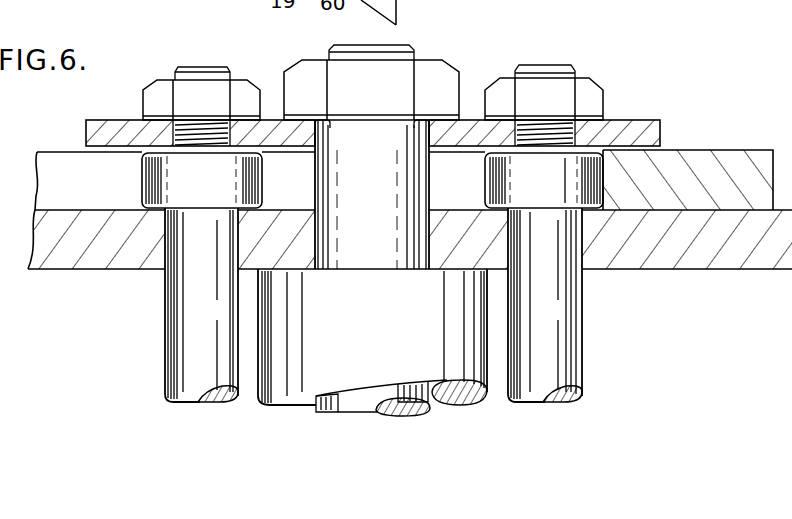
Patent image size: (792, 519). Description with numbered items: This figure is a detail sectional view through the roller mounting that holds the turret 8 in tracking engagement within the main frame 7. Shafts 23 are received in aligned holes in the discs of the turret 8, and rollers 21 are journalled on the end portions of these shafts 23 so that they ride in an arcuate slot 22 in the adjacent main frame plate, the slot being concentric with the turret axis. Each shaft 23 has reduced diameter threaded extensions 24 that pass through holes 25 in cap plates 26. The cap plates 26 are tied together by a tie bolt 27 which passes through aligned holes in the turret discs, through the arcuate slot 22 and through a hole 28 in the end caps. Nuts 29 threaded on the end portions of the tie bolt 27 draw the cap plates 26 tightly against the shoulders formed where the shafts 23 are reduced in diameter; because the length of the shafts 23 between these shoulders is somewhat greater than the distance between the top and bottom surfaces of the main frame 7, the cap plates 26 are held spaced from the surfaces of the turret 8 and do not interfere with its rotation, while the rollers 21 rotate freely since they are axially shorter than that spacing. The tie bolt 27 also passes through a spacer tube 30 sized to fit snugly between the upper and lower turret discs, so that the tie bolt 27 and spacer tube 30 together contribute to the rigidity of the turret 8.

The main frame 7 is at (48, 270).
The turret 8 is at (698, 148).
The rollers 21 is at (209, 191).
The arcuate slot 22 is at (61, 168).
The shafts 23 is at (180, 337).
The reduced diameter threaded extensions 24 is at (199, 68).
The holes 25 is at (185, 118).
The cap plates 26 is at (631, 118).
The tie bolt 27 is at (378, 195).
The hole 28 is at (425, 120).
The nuts 29 is at (380, 99).
The spacer tube 30 is at (381, 336).